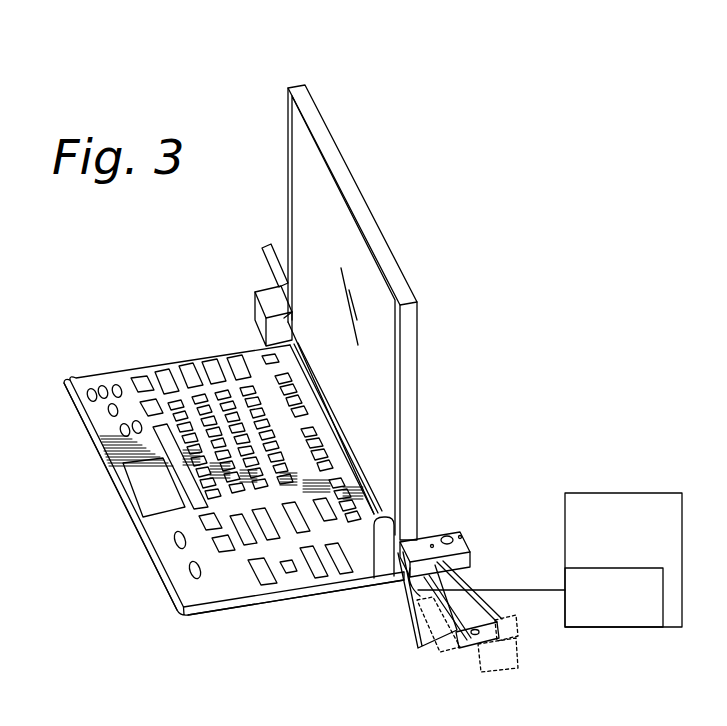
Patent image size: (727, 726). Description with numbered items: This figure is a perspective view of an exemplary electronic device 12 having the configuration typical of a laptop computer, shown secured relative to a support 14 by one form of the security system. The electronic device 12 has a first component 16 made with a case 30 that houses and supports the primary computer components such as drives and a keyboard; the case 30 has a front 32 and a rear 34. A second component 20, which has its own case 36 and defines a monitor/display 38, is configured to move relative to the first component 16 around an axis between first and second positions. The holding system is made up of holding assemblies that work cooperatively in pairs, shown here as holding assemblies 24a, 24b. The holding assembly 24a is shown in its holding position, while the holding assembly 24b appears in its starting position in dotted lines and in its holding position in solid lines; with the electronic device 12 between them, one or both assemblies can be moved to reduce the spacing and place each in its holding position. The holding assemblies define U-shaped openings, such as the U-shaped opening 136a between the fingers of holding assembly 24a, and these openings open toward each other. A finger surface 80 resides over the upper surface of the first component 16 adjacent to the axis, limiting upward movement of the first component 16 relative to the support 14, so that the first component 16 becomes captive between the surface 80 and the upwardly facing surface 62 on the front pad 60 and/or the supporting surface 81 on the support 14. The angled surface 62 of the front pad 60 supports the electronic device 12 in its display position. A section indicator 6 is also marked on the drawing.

The electronic device 12 is at (240, 283).
The second component 20 is at (355, 180).
The monitor/display 38 is at (308, 215).
The U-shaped opening 136a is at (283, 313).
The holding assembly 24a is at (258, 316).
The holding assembly 24b is at (427, 532).
The case 36 is at (410, 390).
The finger surface 80 is at (337, 473).
The front 32 is at (103, 453).
The case 30 is at (269, 600).
The first component 16 is at (217, 605).
The rear 34 is at (396, 475).
The front pad 60 is at (418, 592).
The upwardly facing surface 62 is at (488, 584).
The section line 6 is at (326, 511).
The support 14 is at (628, 552).
The supporting surface 81 is at (615, 619).